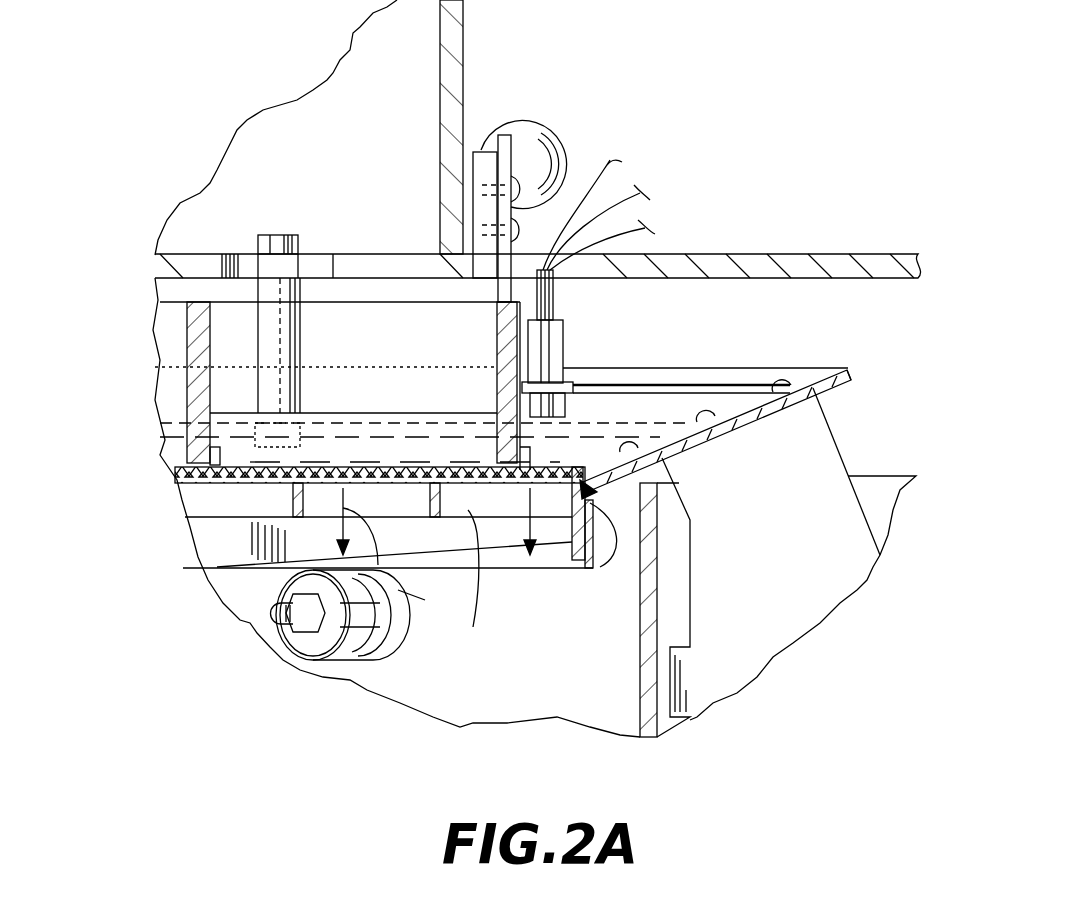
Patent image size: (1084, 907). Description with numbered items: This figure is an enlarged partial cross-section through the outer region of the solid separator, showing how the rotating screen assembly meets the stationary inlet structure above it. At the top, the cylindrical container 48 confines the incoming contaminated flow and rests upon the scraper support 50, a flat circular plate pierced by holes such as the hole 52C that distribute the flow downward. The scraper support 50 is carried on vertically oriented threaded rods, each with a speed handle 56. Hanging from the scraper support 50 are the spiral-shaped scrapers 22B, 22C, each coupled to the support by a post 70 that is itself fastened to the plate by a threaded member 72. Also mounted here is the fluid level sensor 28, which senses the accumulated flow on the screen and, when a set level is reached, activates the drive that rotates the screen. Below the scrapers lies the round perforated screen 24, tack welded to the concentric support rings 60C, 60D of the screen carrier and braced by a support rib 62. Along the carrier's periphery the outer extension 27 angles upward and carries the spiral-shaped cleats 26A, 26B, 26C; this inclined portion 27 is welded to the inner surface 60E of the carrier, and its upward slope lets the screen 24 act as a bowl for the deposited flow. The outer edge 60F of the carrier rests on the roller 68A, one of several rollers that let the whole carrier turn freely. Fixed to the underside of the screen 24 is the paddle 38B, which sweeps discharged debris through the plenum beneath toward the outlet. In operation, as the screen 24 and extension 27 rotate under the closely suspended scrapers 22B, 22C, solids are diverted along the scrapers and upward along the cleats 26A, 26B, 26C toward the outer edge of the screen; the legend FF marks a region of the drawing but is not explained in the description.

The cylindrical container 48 is at (465, 15).
The speed handle 56 is at (563, 105).
The threaded member 72 is at (278, 233).
The hole 52C is at (360, 262).
The fluid level sensor 28 is at (570, 324).
The scraper support 50 is at (851, 253).
The scraper 22B is at (178, 352).
The scraper 22C is at (480, 343).
The post 70 is at (338, 352).
The cleat 26A is at (630, 446).
The cleat 26B is at (702, 420).
The cleat 26C is at (778, 386).
The outer extension 27 is at (737, 444).
The screen 24 is at (173, 480).
The support ring 60C is at (295, 504).
The support rib 62 is at (207, 549).
The roller 68A is at (318, 668).
The force direction FF is at (518, 564).
The support ring 60D is at (467, 591).
The inner surface 60E is at (570, 548).
The outer edge 60F is at (588, 568).
The paddle 38B is at (823, 598).